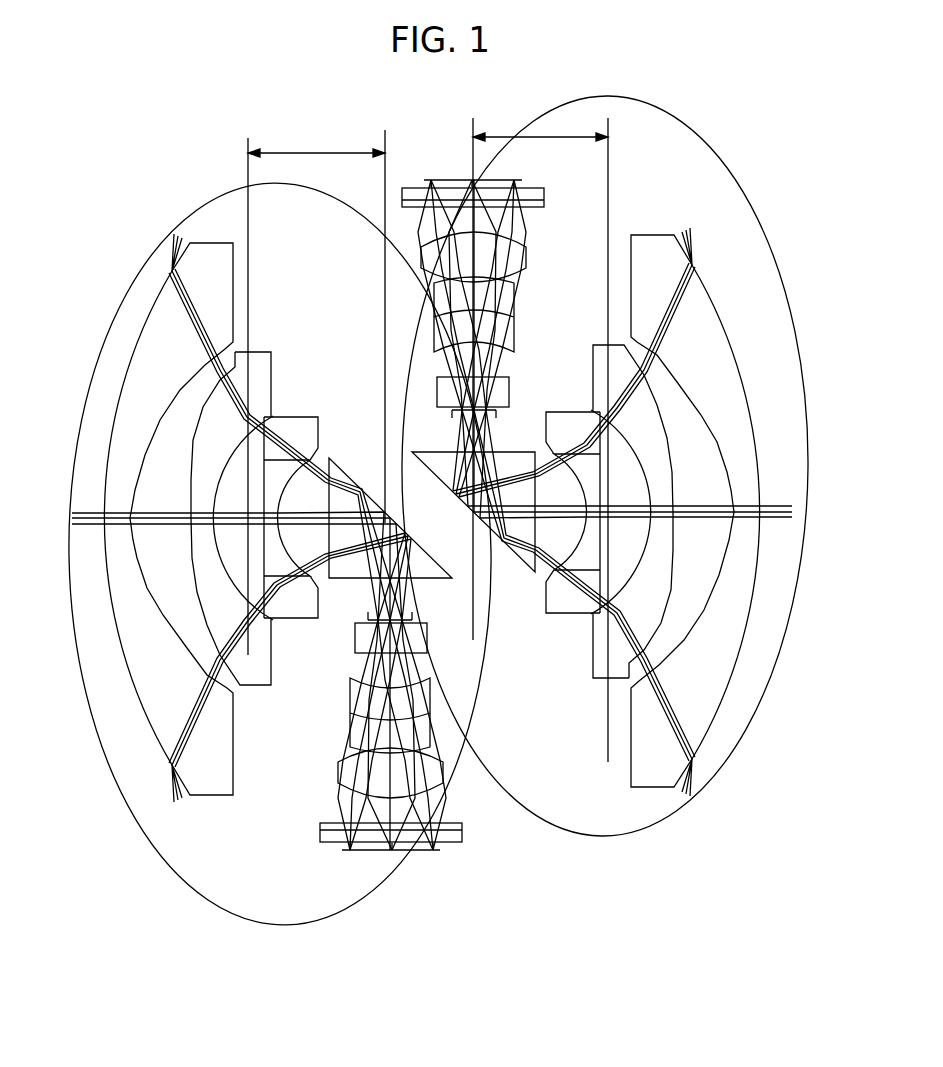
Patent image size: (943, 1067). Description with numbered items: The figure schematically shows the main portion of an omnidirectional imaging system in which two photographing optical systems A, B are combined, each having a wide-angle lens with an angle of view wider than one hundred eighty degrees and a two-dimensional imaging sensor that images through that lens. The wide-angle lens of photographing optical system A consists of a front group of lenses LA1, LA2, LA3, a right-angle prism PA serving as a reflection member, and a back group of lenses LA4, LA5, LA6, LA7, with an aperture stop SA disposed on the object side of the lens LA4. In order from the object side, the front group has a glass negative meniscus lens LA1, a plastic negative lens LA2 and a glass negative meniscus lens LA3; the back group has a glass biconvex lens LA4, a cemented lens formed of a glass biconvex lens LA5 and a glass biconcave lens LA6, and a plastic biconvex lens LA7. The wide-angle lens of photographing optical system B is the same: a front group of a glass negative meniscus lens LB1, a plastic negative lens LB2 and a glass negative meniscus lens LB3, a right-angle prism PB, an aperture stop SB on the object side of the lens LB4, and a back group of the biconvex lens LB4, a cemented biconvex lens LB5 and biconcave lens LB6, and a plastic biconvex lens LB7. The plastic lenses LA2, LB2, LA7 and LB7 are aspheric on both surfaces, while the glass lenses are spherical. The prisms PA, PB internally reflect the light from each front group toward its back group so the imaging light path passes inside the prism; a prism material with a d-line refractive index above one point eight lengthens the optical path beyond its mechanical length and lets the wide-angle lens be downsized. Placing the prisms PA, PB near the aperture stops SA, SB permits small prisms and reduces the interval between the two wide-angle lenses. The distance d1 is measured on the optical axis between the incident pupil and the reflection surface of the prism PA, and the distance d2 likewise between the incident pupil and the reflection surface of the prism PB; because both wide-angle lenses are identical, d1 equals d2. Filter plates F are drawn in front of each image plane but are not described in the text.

The photographing optical system A is at (96, 363).
The photographing optical system B is at (768, 237).
The distance d1 is at (316, 392).
The distance d2 is at (540, 438).
The negative meniscus lens LA1 is at (214, 797).
The negative lens LA2 is at (266, 352).
The negative meniscus lens LA3 is at (300, 417).
The right-angle prism PA is at (356, 596).
The biconvex lens LA4 is at (352, 652).
The biconvex lens LA5 is at (350, 692).
The biconcave lens LA6 is at (350, 730).
The biconvex lens LA7 is at (340, 772).
The aperture stop SA is at (402, 853).
The filter F is at (462, 837).
The negative meniscus lens LB1 is at (640, 770).
The negative lens LB2 is at (604, 679).
The negative meniscus lens LB3 is at (560, 613).
The right-angle prism PB is at (473, 512).
The biconvex lens LB4 is at (511, 390).
The biconvex lens LB5 is at (517, 331).
The biconcave lens LB6 is at (517, 298).
The biconvex lens LB7 is at (528, 258).
The aperture stop SB is at (455, 178).